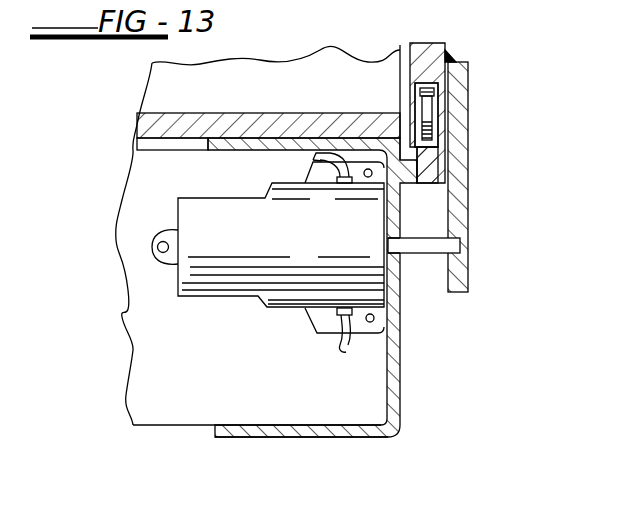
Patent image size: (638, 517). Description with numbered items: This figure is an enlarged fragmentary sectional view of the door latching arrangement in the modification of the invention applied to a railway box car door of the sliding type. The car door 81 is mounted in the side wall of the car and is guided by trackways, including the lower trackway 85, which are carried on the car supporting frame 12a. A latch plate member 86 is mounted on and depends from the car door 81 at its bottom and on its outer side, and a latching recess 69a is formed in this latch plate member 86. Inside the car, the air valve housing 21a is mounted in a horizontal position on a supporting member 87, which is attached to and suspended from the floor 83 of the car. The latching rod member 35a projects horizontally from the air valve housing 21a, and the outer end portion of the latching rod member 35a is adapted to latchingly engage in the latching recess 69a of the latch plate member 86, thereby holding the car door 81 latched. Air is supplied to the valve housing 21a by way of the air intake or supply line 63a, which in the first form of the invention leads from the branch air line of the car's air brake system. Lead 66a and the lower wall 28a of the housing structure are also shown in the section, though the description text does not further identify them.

The car supporting frame 12a is at (430, 393).
The air valve housing 21a is at (230, 297).
The bottom wall of housing 28a is at (373, 430).
The latching rod member 35a is at (435, 248).
The air intake or supply line 63a is at (338, 155).
The lead wire 66a is at (343, 348).
The latching recess 69a is at (461, 245).
The car door 81 is at (434, 50).
The floor 83 is at (316, 124).
The lower trackway 85 is at (428, 168).
The latch plate member 86 is at (457, 220).
The supporting member 87 is at (200, 405).